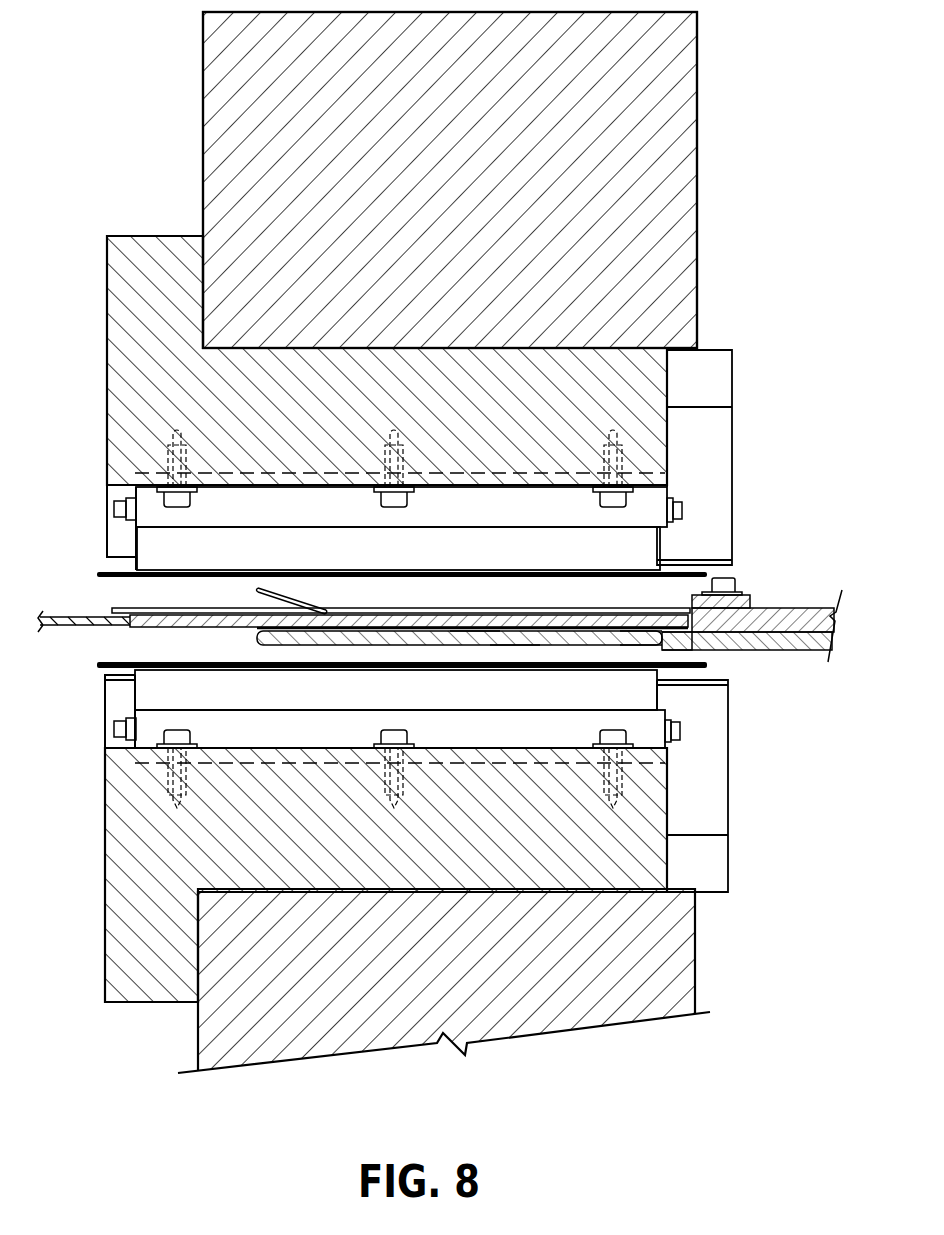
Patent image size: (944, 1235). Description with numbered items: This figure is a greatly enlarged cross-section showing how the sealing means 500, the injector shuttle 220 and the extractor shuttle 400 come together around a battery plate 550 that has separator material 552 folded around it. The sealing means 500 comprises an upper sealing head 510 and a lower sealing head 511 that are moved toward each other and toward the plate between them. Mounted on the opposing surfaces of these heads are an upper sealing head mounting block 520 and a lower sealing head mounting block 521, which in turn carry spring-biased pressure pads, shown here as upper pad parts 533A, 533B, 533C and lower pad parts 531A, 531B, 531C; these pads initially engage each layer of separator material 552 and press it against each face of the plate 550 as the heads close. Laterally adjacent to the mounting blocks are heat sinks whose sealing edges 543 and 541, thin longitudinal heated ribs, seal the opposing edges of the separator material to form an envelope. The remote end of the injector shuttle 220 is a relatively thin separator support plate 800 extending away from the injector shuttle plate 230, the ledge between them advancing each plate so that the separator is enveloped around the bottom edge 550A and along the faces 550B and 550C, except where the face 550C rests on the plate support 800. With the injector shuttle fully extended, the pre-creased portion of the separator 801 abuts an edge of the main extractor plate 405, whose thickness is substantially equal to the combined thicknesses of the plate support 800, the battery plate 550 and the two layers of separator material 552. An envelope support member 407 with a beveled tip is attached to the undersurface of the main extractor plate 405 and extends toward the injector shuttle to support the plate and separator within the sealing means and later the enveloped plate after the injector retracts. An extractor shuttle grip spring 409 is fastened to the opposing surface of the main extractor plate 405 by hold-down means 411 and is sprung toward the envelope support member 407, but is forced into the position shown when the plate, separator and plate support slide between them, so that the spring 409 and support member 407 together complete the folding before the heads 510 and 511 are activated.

The sealing means 500 is at (705, 152).
The upper sealing head 510 is at (677, 230).
The lower sealing head 511 is at (680, 988).
The upper sealing head mounting block 520 is at (643, 380).
The lower sealing head mounting block 521 is at (637, 863).
The upper pressure pad portion 533A is at (642, 520).
The upper pressure pad portion 533B is at (635, 557).
The upper pressure pad portion 533C is at (343, 573).
The lower pressure pad portion 531A is at (638, 730).
The lower pressure pad portion 531B is at (638, 700).
The lower pressure pad portion 531C is at (636, 680).
The sealing edge 543 is at (707, 560).
The sealing edge 541 is at (722, 679).
The extractor shuttle 400 is at (807, 603).
The main extractor plate 405 is at (783, 613).
The envelope support member 407 is at (807, 640).
The hold-down means 411 is at (737, 592).
The extractor shuttle grip spring 409 is at (290, 600).
The plate 550 is at (253, 622).
The bottom edge 550A is at (687, 608).
The face 550B is at (475, 628).
The face 550C is at (512, 645).
The separator material 552 is at (133, 610).
The separator support plate 800 is at (187, 625).
The pre-creased portion of the separator 801 is at (683, 647).
The injector shuttle 220 is at (78, 610).
The injector shuttle plate 230 is at (87, 627).